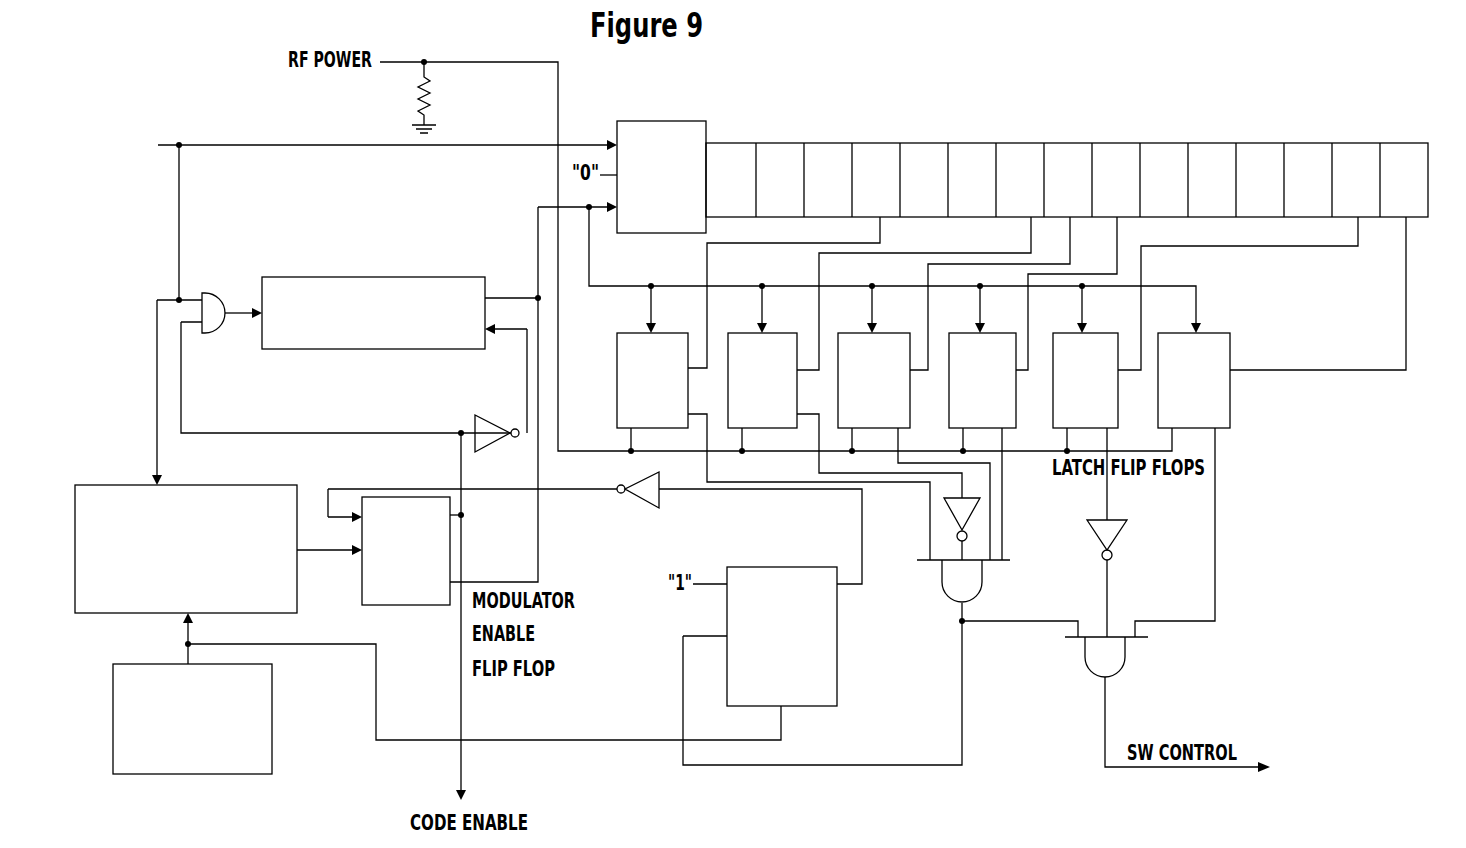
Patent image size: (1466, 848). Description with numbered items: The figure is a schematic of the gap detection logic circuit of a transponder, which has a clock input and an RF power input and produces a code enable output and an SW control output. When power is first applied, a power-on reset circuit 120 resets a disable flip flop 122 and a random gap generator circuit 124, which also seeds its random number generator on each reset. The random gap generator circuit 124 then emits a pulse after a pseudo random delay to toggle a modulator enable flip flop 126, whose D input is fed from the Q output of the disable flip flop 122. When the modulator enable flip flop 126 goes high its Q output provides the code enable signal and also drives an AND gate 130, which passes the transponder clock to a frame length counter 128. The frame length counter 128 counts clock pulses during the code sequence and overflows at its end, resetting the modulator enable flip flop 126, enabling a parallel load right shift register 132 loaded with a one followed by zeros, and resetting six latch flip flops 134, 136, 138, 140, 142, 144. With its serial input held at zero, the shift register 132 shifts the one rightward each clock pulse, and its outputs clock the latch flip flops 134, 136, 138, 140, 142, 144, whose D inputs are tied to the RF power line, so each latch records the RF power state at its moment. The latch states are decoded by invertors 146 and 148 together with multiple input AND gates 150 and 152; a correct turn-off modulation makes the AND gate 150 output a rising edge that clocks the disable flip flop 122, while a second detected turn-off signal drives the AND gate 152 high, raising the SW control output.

The power-on reset circuit 120 is at (272, 745).
The disable flip flop 122 is at (837, 675).
The random gap generator circuit 124 is at (223, 485).
The modulator enable flip flop 126 is at (412, 605).
The frame length counter 128 is at (385, 349).
The AND gate 130 is at (212, 295).
The parallel load right shift register 132 is at (665, 121).
The latch flip flop 134 is at (630, 333).
The latch flip flop 136 is at (748, 333).
The latch flip flop 138 is at (864, 333).
The latch flip flop 140 is at (972, 333).
The latch flip flop 142 is at (1072, 333).
The latch flip flop 144 is at (1180, 333).
The invertor 146 is at (972, 511).
The invertor 148 is at (1117, 535).
The multiple input AND gate 150 is at (979, 581).
The multiple input AND gate 152 is at (1125, 655).